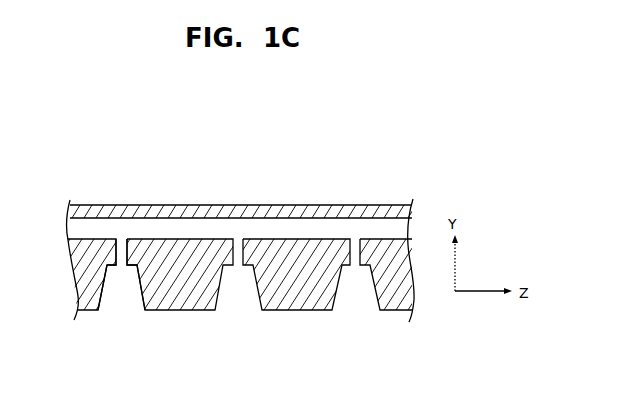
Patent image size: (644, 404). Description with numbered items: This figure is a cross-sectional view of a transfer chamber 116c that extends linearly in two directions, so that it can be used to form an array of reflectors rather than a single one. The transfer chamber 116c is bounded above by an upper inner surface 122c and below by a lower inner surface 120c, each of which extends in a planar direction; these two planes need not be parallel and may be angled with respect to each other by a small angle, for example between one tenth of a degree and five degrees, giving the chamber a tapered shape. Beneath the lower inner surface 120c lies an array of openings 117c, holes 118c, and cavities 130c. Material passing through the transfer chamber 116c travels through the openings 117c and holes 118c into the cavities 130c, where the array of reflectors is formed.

The transfer chamber 116c is at (293, 233).
The openings 117c is at (122, 242).
The holes 118c is at (120, 252).
The lower inner surface 120c is at (182, 240).
The upper inner surface 122c is at (247, 217).
The cavities 130c is at (123, 290).